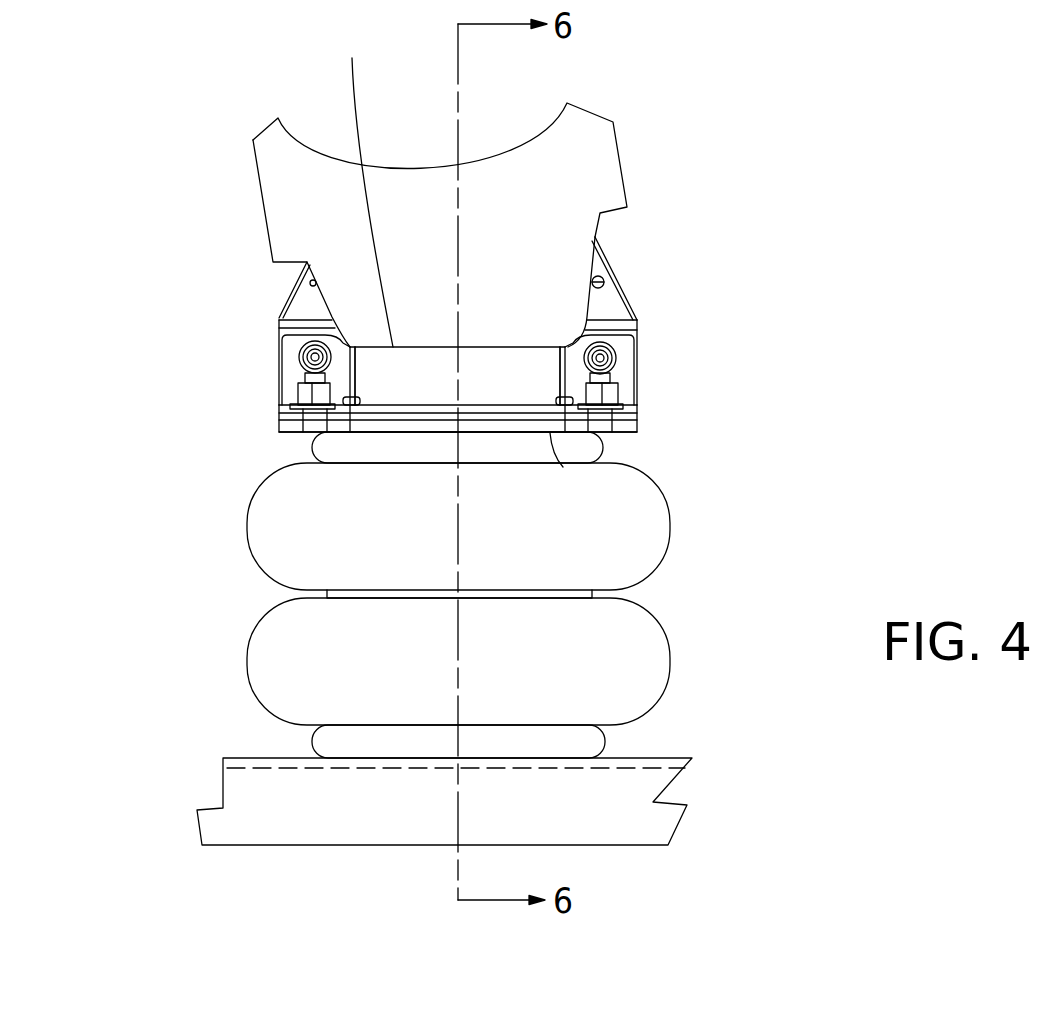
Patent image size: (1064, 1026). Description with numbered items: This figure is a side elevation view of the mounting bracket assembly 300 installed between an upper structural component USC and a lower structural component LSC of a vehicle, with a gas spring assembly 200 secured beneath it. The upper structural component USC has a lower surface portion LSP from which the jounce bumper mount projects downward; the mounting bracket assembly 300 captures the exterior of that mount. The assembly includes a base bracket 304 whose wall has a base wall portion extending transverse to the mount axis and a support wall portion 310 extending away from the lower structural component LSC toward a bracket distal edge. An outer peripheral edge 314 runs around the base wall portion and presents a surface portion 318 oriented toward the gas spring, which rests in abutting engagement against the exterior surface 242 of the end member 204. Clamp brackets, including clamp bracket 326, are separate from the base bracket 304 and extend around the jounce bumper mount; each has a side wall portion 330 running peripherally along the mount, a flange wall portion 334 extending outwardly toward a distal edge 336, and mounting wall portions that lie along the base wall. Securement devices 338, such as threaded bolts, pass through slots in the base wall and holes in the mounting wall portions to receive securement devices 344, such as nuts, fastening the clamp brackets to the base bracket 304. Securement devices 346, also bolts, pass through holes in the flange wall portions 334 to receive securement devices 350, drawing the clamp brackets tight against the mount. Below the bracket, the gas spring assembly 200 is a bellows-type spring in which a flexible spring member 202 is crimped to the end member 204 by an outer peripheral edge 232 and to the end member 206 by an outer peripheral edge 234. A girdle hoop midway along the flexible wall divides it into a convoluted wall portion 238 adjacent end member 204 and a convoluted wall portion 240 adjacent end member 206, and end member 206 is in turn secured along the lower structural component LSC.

The gas spring assembly 200 is at (464, 595).
The flexible spring member 202 is at (365, 594).
The end member 204 is at (465, 469).
The end member 206 is at (470, 732).
The outer peripheral edge 232 is at (312, 452).
The outer peripheral edge 234 is at (312, 743).
The convoluted wall portion 238 is at (245, 532).
The convoluted wall portion 240 is at (245, 660).
The exterior surface 242 is at (563, 467).
The mounting bracket assembly 300 is at (491, 358).
The base bracket 304 is at (262, 314).
The support wall portion 310 is at (618, 296).
The outer peripheral edge 314 is at (280, 423).
The surface portion 318 is at (292, 432).
The clamp bracket 326 is at (556, 375).
The side wall portion 330 is at (415, 383).
The flange wall portion 334 is at (290, 381).
The distal edge 336 is at (278, 357).
The securement device 338 is at (718, 396).
The securement device 344 is at (615, 395).
The securement device 346 is at (739, 360).
The securement device 350 is at (610, 355).
The lower surface portion LSP is at (361, 189).
The upper structural component USC is at (618, 147).
The lower structural component LSC is at (308, 840).